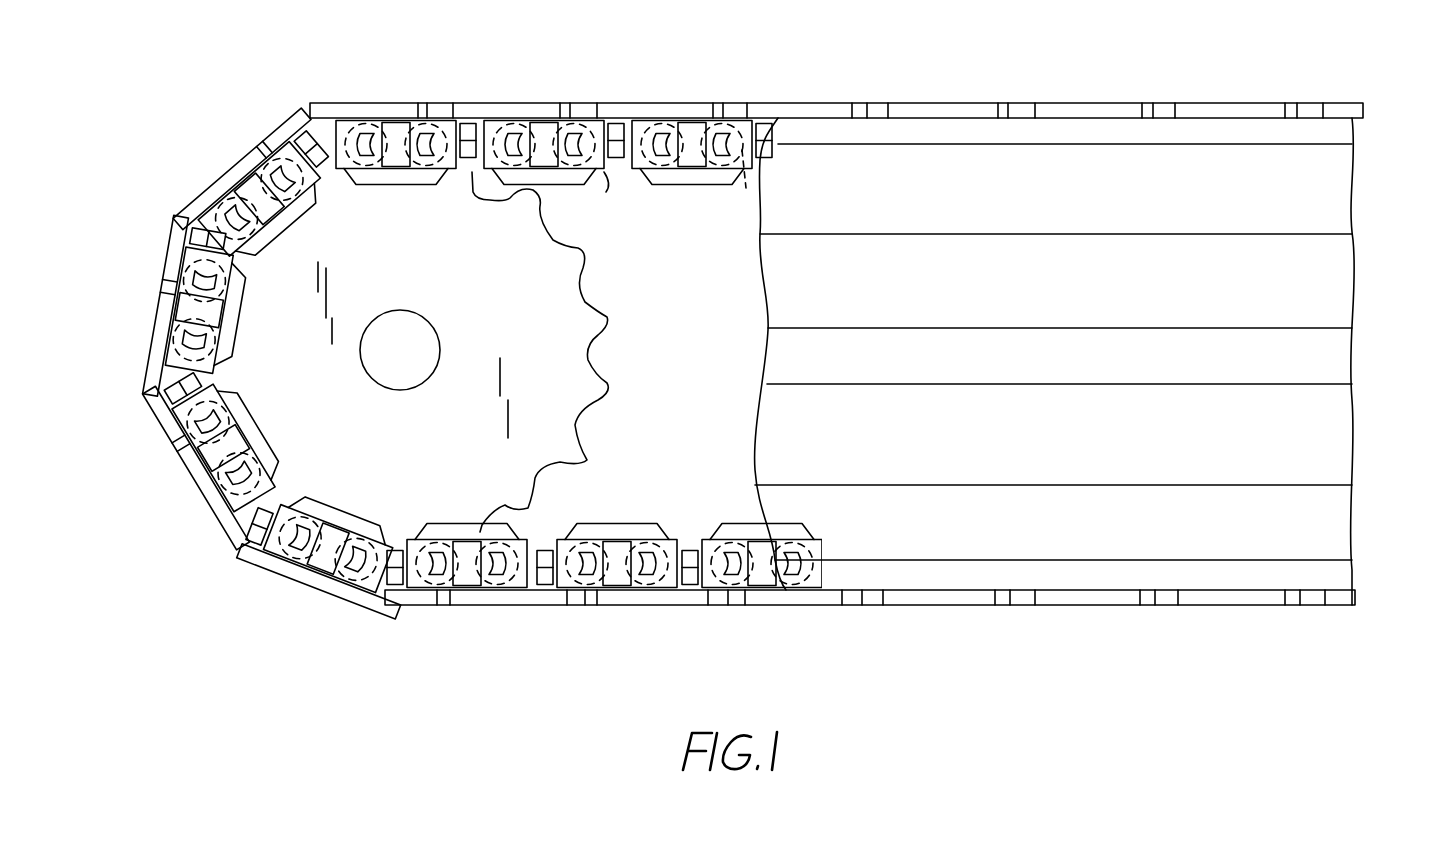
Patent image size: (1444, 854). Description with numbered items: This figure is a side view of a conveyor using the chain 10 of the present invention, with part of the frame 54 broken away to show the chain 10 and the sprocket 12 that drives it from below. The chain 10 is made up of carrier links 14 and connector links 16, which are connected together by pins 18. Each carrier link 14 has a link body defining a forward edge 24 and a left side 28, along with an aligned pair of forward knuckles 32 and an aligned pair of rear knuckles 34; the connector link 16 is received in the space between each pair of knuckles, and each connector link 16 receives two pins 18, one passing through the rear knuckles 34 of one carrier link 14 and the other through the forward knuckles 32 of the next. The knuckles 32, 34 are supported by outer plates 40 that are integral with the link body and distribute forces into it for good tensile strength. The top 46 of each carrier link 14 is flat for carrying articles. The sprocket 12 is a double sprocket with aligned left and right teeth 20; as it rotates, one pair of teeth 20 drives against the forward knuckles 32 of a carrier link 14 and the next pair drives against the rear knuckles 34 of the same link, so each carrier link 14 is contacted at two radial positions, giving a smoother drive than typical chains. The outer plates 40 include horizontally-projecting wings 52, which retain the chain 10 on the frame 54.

The chain 10 is at (748, 77).
The sprocket 12 is at (607, 317).
The carrier link 14 is at (320, 102).
The connector link 16 is at (258, 265).
The pin 18 is at (580, 130).
The sprocket teeth 20 is at (400, 140).
The forward edge 24 is at (310, 105).
The left side 28 is at (250, 166).
The forward knuckles 32 is at (610, 185).
The rear knuckles 34 is at (745, 190).
The outer plates 40 is at (606, 150).
The top 46 is at (1022, 102).
The wings 52 is at (700, 185).
The frame 54 is at (1352, 194).